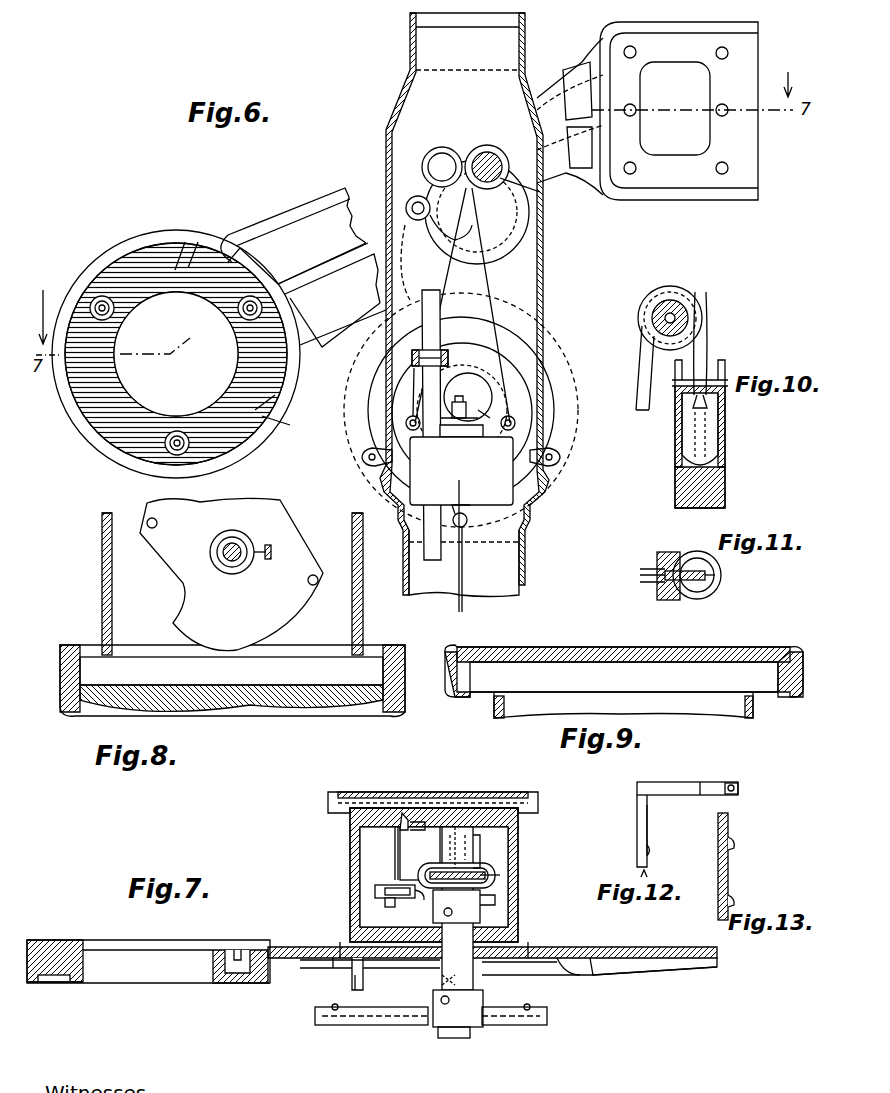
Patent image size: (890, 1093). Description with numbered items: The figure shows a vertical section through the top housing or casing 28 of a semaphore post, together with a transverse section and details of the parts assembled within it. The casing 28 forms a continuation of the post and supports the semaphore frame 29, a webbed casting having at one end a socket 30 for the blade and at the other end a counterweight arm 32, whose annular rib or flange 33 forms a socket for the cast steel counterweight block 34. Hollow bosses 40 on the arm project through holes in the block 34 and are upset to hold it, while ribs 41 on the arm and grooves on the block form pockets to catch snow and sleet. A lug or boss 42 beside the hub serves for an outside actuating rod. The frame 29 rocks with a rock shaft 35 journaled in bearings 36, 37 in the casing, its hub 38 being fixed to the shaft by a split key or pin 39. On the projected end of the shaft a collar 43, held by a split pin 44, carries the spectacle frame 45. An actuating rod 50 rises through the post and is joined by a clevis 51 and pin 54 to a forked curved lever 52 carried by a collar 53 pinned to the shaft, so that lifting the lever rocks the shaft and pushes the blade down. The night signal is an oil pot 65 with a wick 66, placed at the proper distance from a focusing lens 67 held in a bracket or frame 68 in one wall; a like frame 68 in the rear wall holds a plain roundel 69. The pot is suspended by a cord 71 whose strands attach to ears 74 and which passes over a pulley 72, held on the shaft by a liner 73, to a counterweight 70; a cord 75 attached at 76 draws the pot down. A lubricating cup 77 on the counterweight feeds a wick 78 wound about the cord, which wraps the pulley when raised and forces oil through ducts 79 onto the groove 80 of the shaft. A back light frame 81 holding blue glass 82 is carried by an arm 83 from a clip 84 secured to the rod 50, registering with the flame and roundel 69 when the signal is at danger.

In FIG. 6, the housing or casing 28 is at (545, 290).
In FIG. 7, the housing or casing 28 is at (350, 856).
In FIG. 6, the semaphore frame 29 is at (302, 208).
In FIG. 7, the semaphore frame 29 is at (285, 947).
In FIG. 6, the socket 30 is at (758, 64).
In FIG. 7, the socket 30 is at (712, 972).
In FIG. 6, the counterweight arm 32 is at (135, 246).
In FIG. 6, the annular rib or flange 33 is at (110, 455).
In FIG. 7, the annular rib or flange 33 is at (32, 983).
In FIG. 6, the counterweight block 34 is at (95, 418).
In FIG. 7, the counterweight block 34 is at (80, 982).
In FIG. 6, the rock shaft 35 is at (442, 147).
In FIG. 7, the rock shaft 35 is at (457, 908).
In FIG. 7, the bearing 36 is at (485, 918).
In FIG. 7, the bearing 37 is at (460, 830).
In FIG. 7, the hub 38 is at (483, 992).
In FIG. 7, the key or pin 39 is at (440, 985).
In FIG. 6, the hollow bosses 40 is at (95, 300).
In FIG. 7, the hollow bosses 40 is at (238, 985).
In FIG. 6, the ribs 41 is at (198, 242).
In FIG. 7, the ribs 41 is at (85, 940).
In FIG. 7, the lug or boss 42 is at (352, 980).
In FIG. 7, the collar 43 is at (478, 1027).
In FIG. 7, the split pin 44 is at (457, 1038).
In FIG. 7, the spectacle frame 45 is at (395, 1025).
In FIG. 6, the actuating rod 50 is at (428, 552).
In FIG. 6, the clevis 51 is at (372, 318).
In FIG. 7, the clevis 51 is at (375, 891).
In FIG. 6, the curved lever 52 is at (518, 250).
In FIG. 7, the curved lever 52 is at (500, 895).
In FIG. 6, the collar 53 is at (505, 178).
In FIG. 7, the collar 53 is at (442, 910).
In FIG. 6, the pin 54 is at (410, 200).
In FIG. 7, the pin 54 is at (375, 888).
In FIG. 6, the oil pot 65 is at (461, 471).
In FIG. 8, the oil pot 65 is at (170, 585).
In FIG. 7, the oil pot 65 is at (420, 853).
In FIG. 6, the wick 66 is at (465, 397).
In FIG. 8, the wick 66 is at (222, 540).
In FIG. 8, the lens 67 is at (255, 712).
In FIG. 7, the lens 67 is at (410, 968).
In FIG. 8, the bracket or frame 68 is at (398, 668).
In FIG. 9, the bracket or frame 68 is at (792, 708).
In FIG. 7, the bracket or frame 68 is at (350, 825).
In FIG. 9, the plain roundel 69 is at (608, 648).
In FIG. 7, the plain roundel 69 is at (520, 792).
In FIG. 10, the counterweight 70 is at (725, 488).
In FIG. 6, the cord or wire 71 is at (500, 325).
In FIG. 10, the cord or wire 71 is at (636, 348).
In FIG. 11, the cord or wire 71 is at (640, 575).
In FIG. 10, the pulley 72 is at (678, 292).
In FIG. 11, the pulley 72 is at (670, 552).
In FIG. 7, the pulley 72 is at (455, 860).
In FIG. 7, the liner 73 is at (489, 851).
In FIG. 6, the ears 74 is at (418, 425).
In FIG. 6, the cord 75 is at (464, 600).
In FIG. 6, the attachment point 76 is at (468, 520).
In FIG. 10, the lubricating cup 77 is at (725, 442).
In FIG. 11, the lubricating cup 77 is at (718, 588).
In FIG. 7, the lubricating cup 77 is at (495, 876).
In FIG. 10, the wick 78 is at (710, 338).
In FIG. 11, the wick 78 is at (695, 582).
In FIG. 7, the wick 78 is at (467, 864).
In FIG. 10, the ducts 79 is at (690, 305).
In FIG. 6, the groove 80 is at (490, 152).
In FIG. 6, the back light frame 81 is at (445, 345).
In FIG. 7, the back light frame 81 is at (403, 820).
In FIG. 12, the back light frame 81 is at (650, 850).
In FIG. 13, the back light frame 81 is at (732, 840).
In FIG. 6, the blue glass 82 is at (462, 375).
In FIG. 7, the blue glass 82 is at (418, 822).
In FIG. 12, the blue glass 82 is at (650, 832).
In FIG. 13, the blue glass 82 is at (728, 884).
In FIG. 7, the arm 83 is at (395, 848).
In FIG. 12, the arm 83 is at (693, 795).
In FIG. 6, the clip 84 is at (412, 378).
In FIG. 12, the clip 84 is at (733, 783).